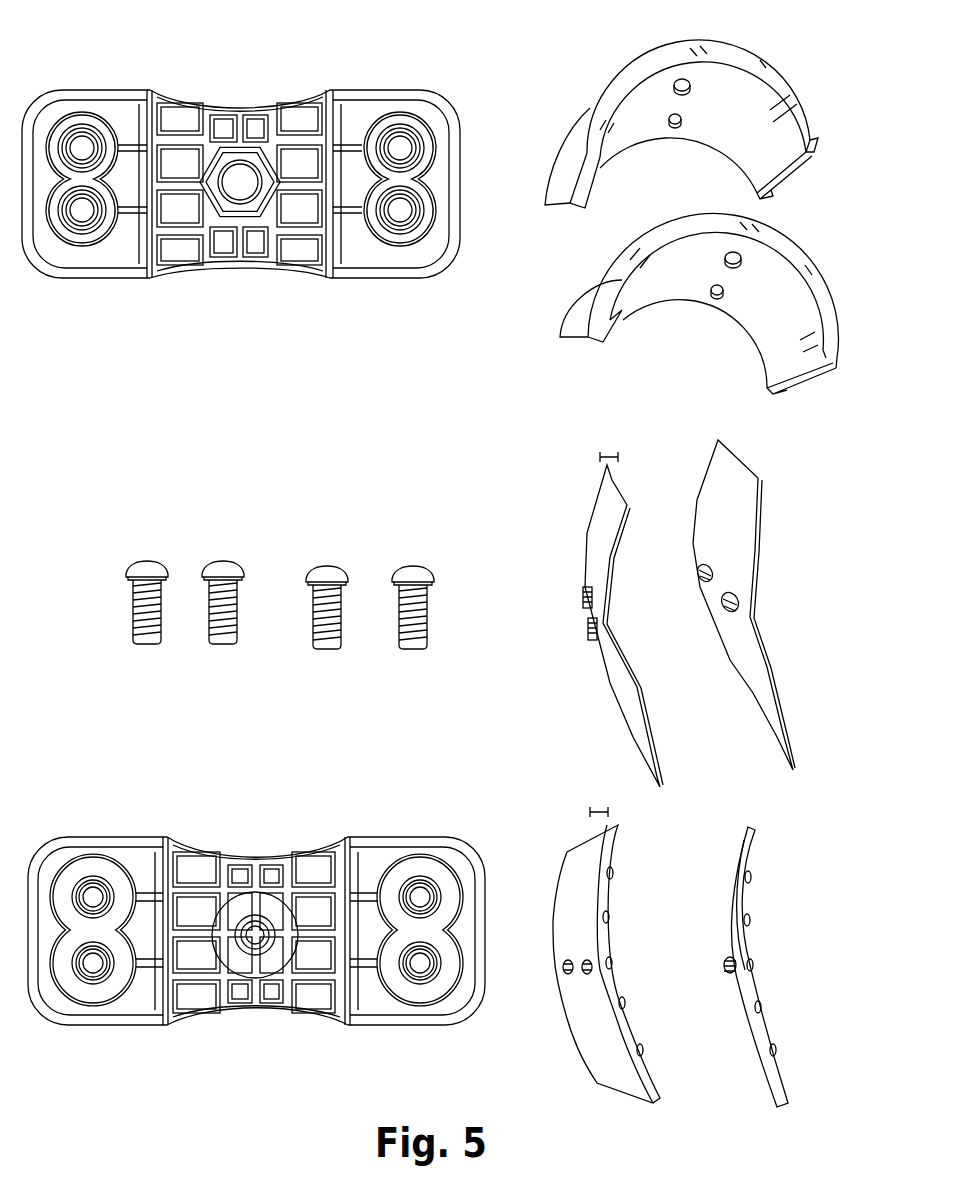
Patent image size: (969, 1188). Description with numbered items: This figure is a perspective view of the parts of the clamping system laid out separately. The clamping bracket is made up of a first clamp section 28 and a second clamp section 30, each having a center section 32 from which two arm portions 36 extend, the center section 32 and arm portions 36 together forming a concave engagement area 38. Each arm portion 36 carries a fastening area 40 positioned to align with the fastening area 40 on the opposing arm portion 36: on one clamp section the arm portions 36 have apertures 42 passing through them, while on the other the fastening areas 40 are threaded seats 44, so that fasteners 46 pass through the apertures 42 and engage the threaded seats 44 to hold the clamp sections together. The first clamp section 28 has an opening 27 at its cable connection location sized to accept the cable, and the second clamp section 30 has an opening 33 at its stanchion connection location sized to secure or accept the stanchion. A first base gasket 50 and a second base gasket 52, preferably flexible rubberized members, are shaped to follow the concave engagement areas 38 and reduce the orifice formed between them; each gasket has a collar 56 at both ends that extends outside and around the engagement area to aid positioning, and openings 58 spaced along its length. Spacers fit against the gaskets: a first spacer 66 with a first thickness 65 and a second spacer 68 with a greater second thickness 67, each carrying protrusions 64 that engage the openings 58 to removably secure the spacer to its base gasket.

The opening 27 is at (257, 925).
The first clamp section 28 is at (306, 812).
The second clamp section 30 is at (452, 72).
The center section 32 is at (322, 279).
The opening 33 is at (238, 196).
The arm portions 36 is at (66, 89).
The concave engagement area 38 is at (265, 90).
The fastening area 40 is at (414, 246).
The aperture 42 is at (85, 222).
The threaded seat 44 is at (93, 878).
The fasteners 46 is at (405, 564).
The first base gasket 50 is at (587, 70).
The second base gasket 52 is at (828, 247).
The collar 56 is at (570, 198).
The openings 58 is at (676, 125).
The protrusions 64 is at (583, 630).
The first thickness 65 is at (608, 450).
The first spacer 66 is at (752, 735).
The second thickness 67 is at (598, 806).
The second spacer 68 is at (752, 1084).